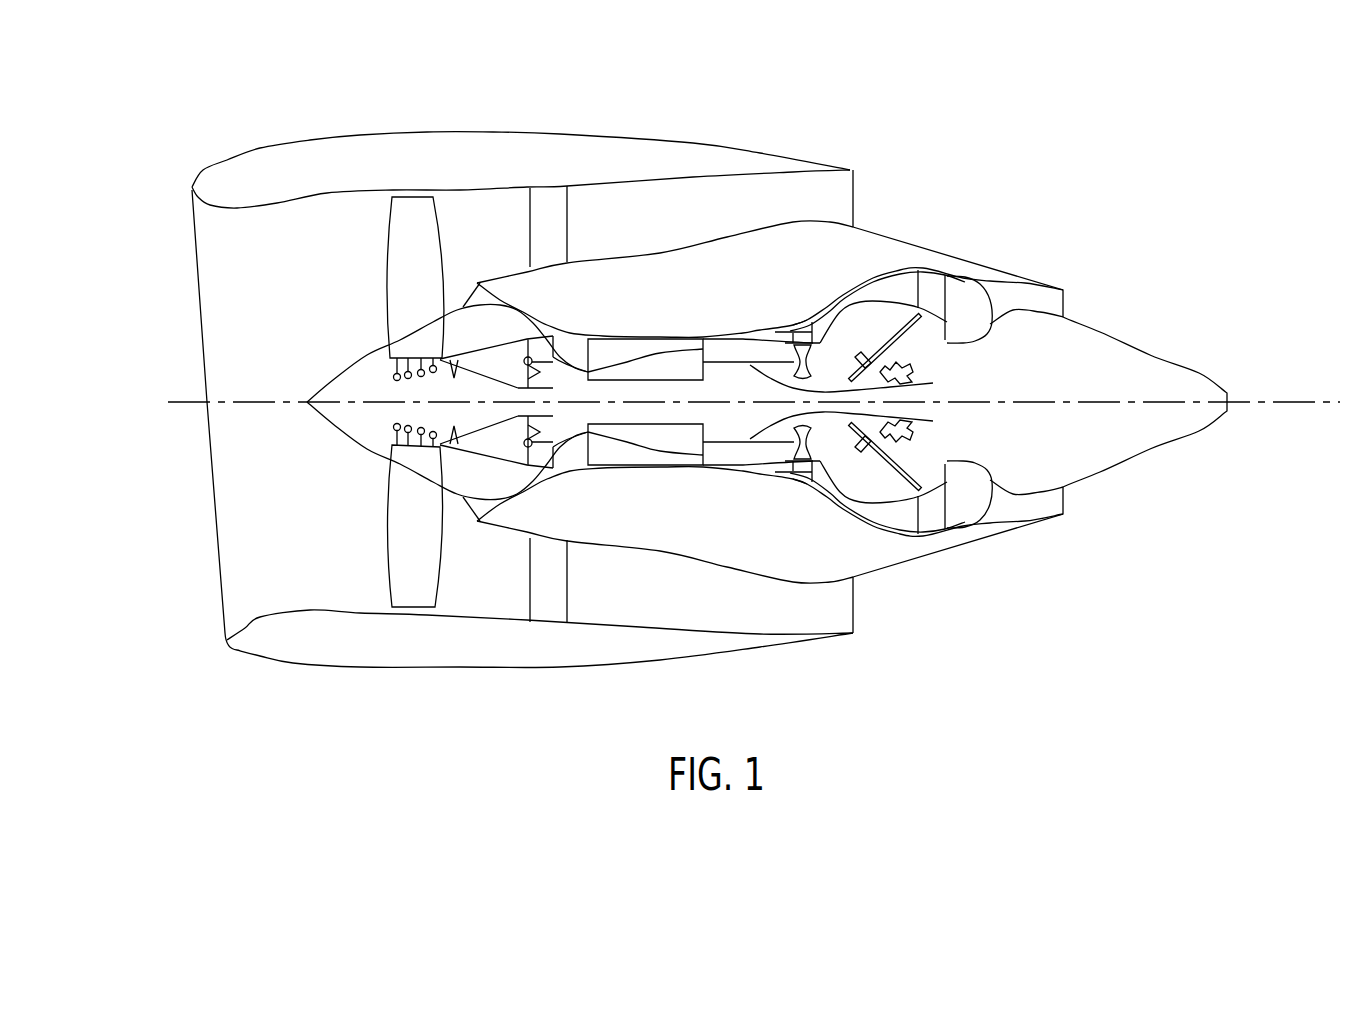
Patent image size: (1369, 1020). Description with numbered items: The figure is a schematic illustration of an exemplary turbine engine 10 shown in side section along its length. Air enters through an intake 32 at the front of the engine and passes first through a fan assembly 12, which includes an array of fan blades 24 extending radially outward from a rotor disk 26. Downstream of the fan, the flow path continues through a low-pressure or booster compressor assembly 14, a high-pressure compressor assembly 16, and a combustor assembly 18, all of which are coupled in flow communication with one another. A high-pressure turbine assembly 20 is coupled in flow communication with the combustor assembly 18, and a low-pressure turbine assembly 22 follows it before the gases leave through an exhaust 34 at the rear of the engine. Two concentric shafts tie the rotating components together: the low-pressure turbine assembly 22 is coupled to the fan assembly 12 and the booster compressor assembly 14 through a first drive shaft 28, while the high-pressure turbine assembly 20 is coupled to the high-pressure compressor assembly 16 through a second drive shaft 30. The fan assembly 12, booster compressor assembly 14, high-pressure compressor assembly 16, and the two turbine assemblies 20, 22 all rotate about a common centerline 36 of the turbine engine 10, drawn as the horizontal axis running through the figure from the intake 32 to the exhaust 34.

The turbine engine 10 is at (993, 138).
The fan assembly 12 is at (376, 402).
The booster compressor assembly 14 is at (483, 272).
The high-pressure compressor assembly 16 is at (638, 330).
The combustor assembly 18 is at (755, 323).
The high-pressure turbine assembly 20 is at (808, 310).
The low-pressure turbine assembly 22 is at (888, 265).
The fan blades 24 is at (428, 292).
The rotor disk 26 is at (378, 391).
The first drive shaft 28 is at (570, 337).
The second drive shaft 30 is at (933, 383).
The intake 32 is at (155, 238).
The exhaust 34 is at (1085, 307).
The centerline 36 is at (1276, 402).